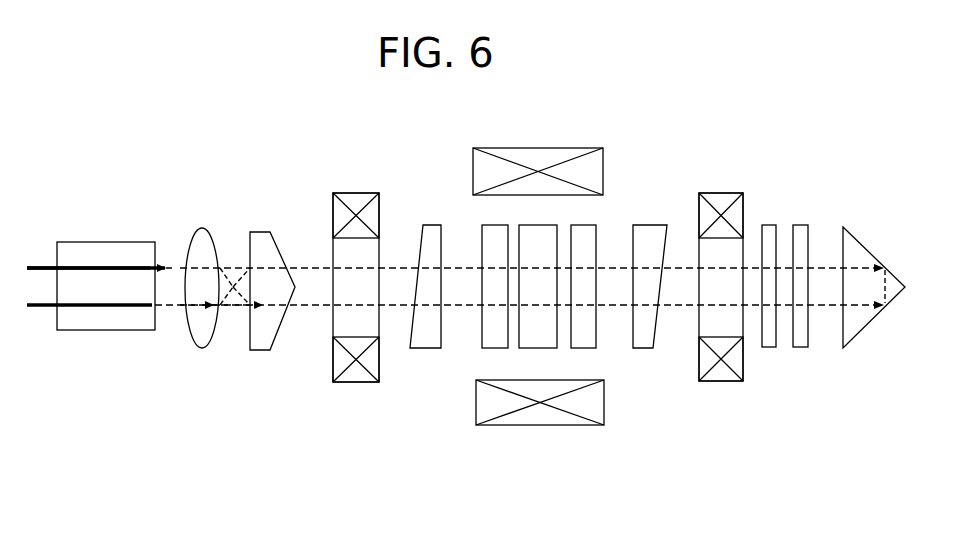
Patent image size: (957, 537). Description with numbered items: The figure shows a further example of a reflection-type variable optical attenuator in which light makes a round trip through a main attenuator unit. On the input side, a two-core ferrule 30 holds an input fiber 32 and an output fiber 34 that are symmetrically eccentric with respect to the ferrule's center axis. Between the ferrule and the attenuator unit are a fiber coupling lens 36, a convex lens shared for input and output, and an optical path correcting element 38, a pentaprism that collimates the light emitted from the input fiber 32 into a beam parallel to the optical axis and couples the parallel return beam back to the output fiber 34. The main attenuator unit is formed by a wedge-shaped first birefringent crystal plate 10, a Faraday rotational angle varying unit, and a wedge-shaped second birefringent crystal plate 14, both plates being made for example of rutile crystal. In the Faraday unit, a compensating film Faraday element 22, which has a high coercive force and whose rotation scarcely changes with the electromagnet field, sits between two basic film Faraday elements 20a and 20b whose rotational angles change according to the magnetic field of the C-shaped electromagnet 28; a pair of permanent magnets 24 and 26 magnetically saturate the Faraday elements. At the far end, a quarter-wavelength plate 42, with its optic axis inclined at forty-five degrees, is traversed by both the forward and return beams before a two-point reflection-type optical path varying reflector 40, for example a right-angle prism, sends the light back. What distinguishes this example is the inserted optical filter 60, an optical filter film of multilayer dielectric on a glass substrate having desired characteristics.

The first birefringent crystal plate 10 is at (427, 340).
The second birefringent crystal plate 14 is at (646, 340).
The basic film Faraday element 20a is at (498, 228).
The basic film Faraday element 20b is at (578, 228).
The compensating film Faraday element 22 is at (537, 340).
The permanent magnet 24 is at (340, 360).
The permanent magnet 26 is at (740, 358).
The C-shaped electromagnet 28 is at (545, 417).
The two-core ferrule 30 is at (78, 322).
The input fiber 32 is at (146, 318).
The output fiber 34 is at (138, 266).
The fiber coupling lens 36 is at (195, 248).
The optical path correcting element 38 is at (262, 236).
The optical path varying reflector 40 is at (868, 325).
The quarter-wavelength plate 42 is at (772, 332).
The optical filter 60 is at (802, 232).